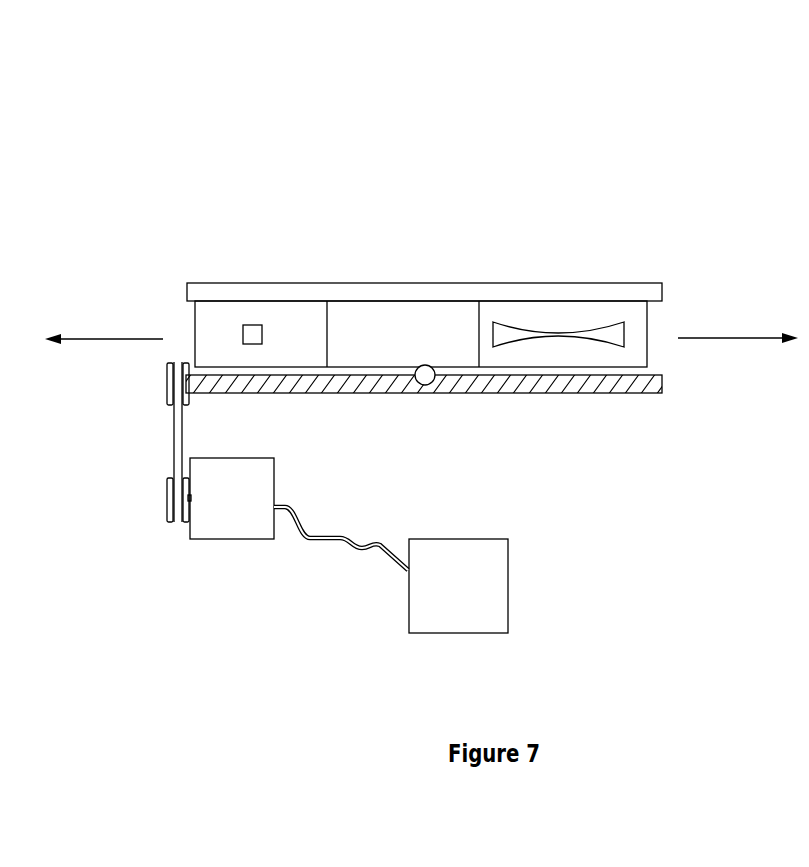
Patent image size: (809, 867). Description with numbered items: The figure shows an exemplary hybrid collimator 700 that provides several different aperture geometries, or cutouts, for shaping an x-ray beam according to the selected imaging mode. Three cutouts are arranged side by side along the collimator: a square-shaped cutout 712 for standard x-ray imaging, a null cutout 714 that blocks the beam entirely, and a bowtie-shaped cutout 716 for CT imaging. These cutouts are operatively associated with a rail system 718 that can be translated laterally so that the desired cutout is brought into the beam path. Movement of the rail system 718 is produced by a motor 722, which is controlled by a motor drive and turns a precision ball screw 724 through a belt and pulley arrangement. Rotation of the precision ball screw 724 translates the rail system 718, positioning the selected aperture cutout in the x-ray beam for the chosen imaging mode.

The hybrid collimator 700 is at (675, 134).
The square-shaped cutout 712 is at (253, 323).
The null cutout 714 is at (403, 325).
The bowtie-shaped cutout 716 is at (553, 330).
The rail system 718 is at (611, 283).
The motor 722 is at (241, 540).
The precision ball screw 724 is at (623, 394).